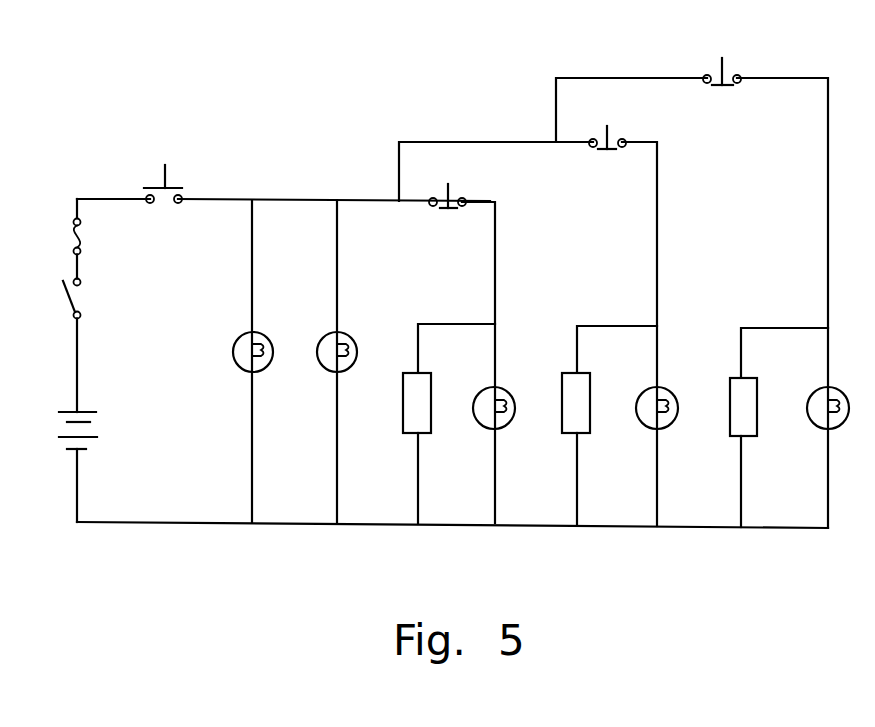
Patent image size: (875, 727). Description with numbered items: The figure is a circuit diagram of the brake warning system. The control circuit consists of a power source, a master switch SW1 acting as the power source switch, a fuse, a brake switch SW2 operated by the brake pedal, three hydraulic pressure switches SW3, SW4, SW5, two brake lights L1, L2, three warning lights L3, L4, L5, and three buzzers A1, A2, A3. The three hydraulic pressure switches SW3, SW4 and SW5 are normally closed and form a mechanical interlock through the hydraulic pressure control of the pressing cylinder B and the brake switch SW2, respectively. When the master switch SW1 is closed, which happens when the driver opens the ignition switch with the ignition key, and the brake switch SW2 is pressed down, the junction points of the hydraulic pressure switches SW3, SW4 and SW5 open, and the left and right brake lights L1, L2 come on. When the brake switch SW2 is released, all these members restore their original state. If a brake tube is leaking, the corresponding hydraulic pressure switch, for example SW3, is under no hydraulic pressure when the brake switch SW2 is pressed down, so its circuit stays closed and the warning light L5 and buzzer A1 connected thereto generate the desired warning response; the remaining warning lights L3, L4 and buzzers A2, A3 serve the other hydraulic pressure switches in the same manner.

The master switch SW1 is at (49, 305).
The brake switch SW2 is at (187, 182).
The hydraulic pressure switch SW3 is at (468, 190).
The hydraulic pressure switch SW4 is at (627, 131).
The hydraulic pressure switch SW5 is at (742, 64).
The brake light L1 is at (258, 366).
The brake light L2 is at (343, 366).
The warning light L3 is at (498, 424).
The warning light L4 is at (662, 424).
The warning light L5 is at (833, 424).
The buzzer A1 is at (417, 403).
The buzzer A2 is at (576, 403).
The buzzer A3 is at (743, 407).
The pressing cylinder B is at (78, 467).